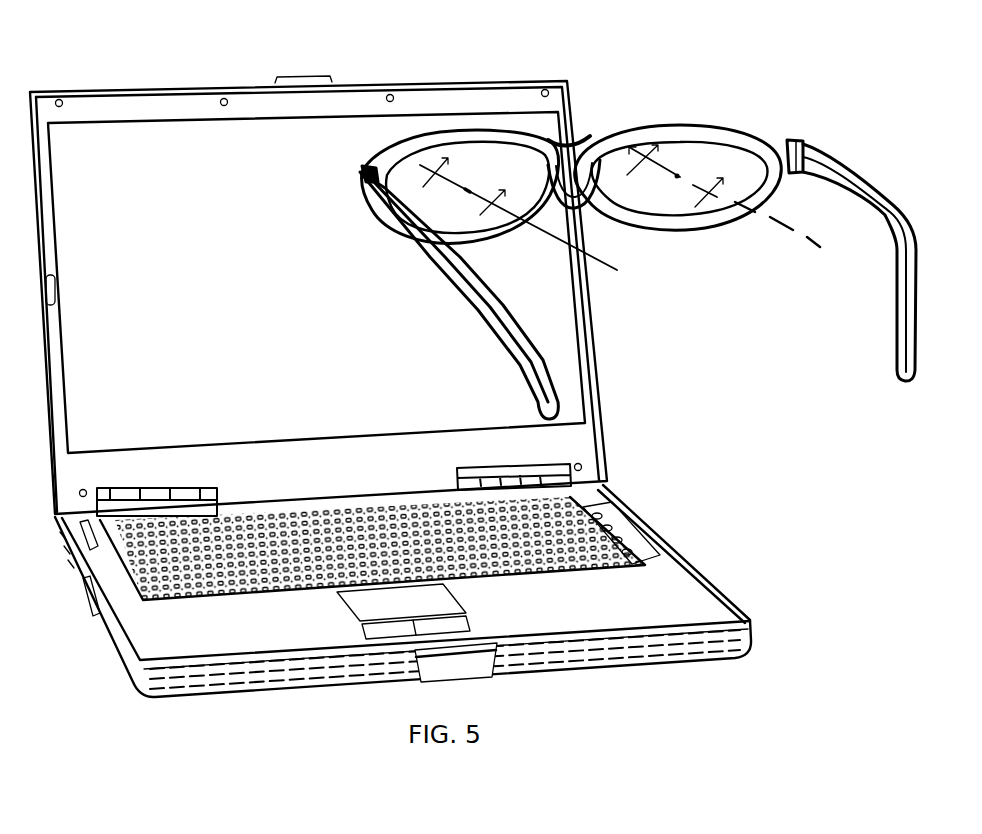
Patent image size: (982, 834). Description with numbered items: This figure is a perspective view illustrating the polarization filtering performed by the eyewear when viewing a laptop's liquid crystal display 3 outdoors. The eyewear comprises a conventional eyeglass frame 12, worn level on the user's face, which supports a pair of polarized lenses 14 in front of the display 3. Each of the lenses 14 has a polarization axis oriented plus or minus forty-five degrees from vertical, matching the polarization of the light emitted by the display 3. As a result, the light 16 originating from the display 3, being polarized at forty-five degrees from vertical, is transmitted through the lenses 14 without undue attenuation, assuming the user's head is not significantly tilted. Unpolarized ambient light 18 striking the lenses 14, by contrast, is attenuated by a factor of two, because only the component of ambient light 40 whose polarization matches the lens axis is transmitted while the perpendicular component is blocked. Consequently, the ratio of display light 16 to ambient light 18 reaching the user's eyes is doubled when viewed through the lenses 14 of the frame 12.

The liquid crystal display 3 is at (272, 158).
The eyeglass frame 12 is at (830, 158).
The lenses 14 is at (528, 165).
The light 16 is at (437, 167).
The ambient light 18 is at (643, 160).
The component of ambient light 40 is at (710, 190).